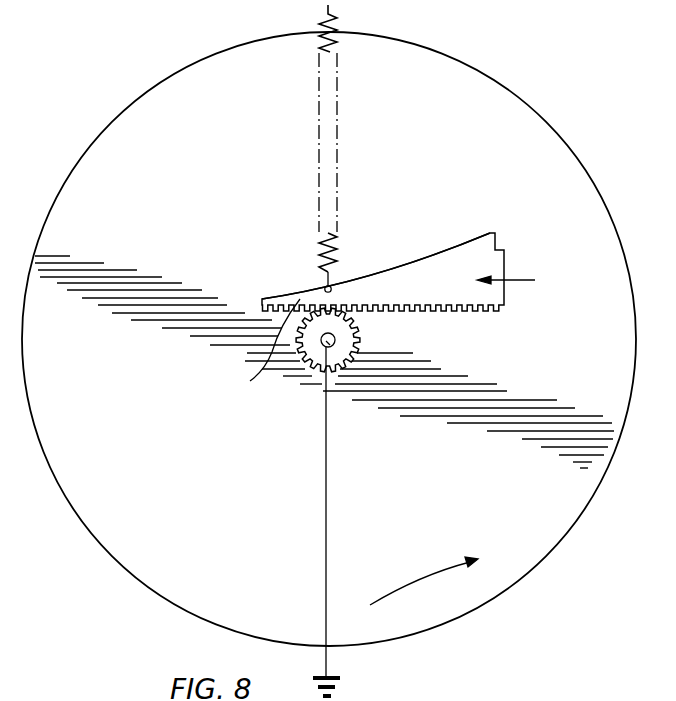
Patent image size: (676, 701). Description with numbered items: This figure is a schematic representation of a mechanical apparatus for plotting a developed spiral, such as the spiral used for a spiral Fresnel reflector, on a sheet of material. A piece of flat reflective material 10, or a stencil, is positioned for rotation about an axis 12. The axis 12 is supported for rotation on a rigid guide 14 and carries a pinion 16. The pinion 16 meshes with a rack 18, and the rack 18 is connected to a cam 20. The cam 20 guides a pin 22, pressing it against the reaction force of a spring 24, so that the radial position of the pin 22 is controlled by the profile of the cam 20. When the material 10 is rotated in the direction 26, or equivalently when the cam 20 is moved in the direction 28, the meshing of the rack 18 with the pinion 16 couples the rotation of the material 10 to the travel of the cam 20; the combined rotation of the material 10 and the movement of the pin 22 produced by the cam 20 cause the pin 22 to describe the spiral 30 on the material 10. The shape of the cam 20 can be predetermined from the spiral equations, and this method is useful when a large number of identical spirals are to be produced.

The flat reflective material 10 is at (580, 494).
The axis 12 is at (335, 337).
The rigid guide 14 is at (325, 485).
The pinion 16 is at (337, 368).
The rack 18 is at (470, 309).
The cam 20 is at (446, 266).
The pin 22 is at (324, 289).
The spring 24 is at (338, 258).
The direction of rotation 26 is at (402, 595).
The direction of cam movement 28 is at (521, 282).
The spiral 30 is at (257, 349).